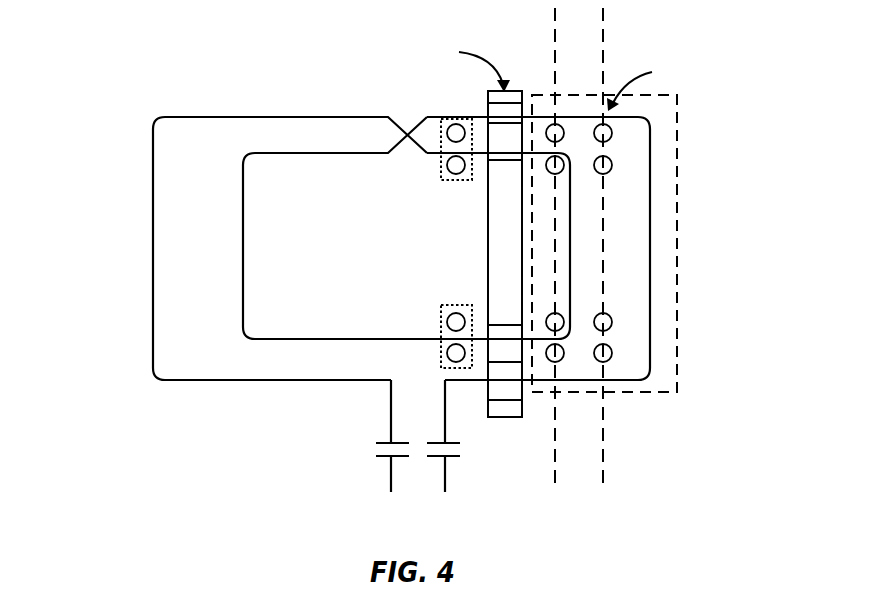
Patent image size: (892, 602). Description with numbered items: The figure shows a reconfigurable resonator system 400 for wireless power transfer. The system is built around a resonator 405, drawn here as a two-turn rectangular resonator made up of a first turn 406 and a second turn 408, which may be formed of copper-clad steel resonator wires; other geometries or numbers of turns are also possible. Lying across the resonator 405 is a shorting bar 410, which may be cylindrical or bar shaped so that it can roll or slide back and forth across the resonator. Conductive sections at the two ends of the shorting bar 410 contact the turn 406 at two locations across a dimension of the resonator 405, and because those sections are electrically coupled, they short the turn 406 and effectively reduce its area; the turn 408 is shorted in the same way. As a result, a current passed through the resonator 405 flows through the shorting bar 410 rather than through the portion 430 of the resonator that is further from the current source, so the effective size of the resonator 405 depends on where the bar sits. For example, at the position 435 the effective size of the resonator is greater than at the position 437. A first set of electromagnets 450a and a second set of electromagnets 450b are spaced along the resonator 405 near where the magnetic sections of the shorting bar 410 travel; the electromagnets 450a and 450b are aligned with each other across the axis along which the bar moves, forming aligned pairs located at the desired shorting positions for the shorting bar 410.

The reconfigurable resonator system 400 is at (414, 250).
The resonator 405 is at (391, 420).
The first turn 406 is at (251, 115).
The second turn 408 is at (243, 202).
The shorting bar 410 is at (502, 251).
The portion of the resonator further from the current source 430 is at (653, 393).
The shorting bar position 435 is at (603, 460).
The shorting bar position 437 is at (554, 459).
The first set of electromagnets 450a is at (445, 181).
The second set of electromagnets 450b is at (445, 304).